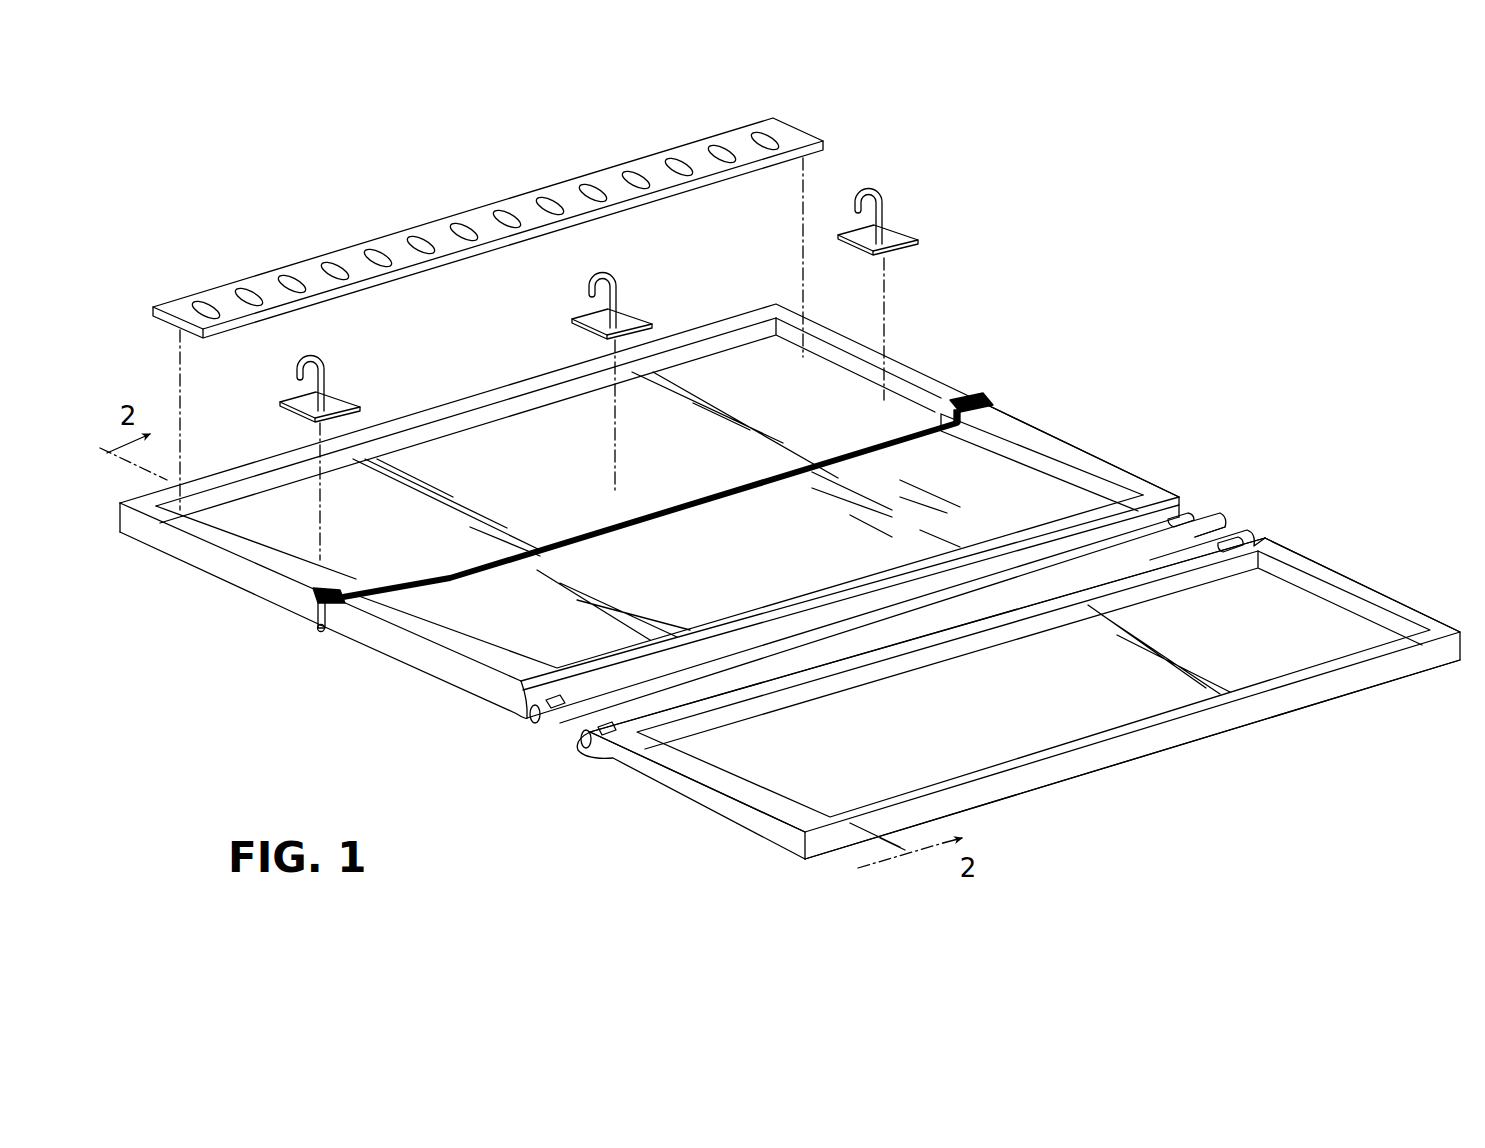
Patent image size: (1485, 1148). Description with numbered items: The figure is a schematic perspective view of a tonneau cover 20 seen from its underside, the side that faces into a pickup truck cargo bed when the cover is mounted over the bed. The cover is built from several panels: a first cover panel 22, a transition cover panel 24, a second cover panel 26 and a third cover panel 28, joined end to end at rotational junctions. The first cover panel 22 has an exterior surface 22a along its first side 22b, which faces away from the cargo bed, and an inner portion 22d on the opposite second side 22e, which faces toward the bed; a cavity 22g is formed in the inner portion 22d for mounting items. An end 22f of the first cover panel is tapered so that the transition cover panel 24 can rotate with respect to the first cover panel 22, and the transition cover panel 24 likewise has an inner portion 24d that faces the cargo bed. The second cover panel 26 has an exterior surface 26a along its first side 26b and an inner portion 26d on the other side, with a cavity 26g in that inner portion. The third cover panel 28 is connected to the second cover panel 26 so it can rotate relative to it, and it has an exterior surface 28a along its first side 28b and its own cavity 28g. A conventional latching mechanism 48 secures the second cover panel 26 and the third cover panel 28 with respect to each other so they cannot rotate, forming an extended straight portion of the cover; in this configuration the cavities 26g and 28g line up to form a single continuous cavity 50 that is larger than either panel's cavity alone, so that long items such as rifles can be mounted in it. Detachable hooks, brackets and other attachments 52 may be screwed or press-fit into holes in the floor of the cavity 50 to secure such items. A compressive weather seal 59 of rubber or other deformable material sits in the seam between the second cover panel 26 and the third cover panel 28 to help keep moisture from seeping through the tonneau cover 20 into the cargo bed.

The tonneau cover 20 is at (990, 241).
The first cover panel 22 is at (1303, 563).
The exterior surface 22a is at (632, 772).
The first side 22b is at (743, 849).
The inner portion 22d is at (1367, 599).
The second side 22e is at (1413, 617).
The end 22f is at (1218, 568).
The cavity 22g is at (1075, 695).
The transition cover panel 24 is at (1192, 555).
The inner portion 24d is at (1148, 532).
The second cover panel 26 is at (1064, 430).
The exterior surface 26a is at (470, 702).
The first side 26b is at (398, 682).
The inner portion 26d is at (1005, 425).
The cavity 26g is at (1077, 500).
The third cover panel 28 is at (845, 347).
The exterior surface 28a is at (277, 617).
The first side 28b is at (215, 588).
The cavity 28g is at (265, 520).
The latching mechanism 48 is at (958, 395).
The single continuous cavity 50 is at (840, 410).
The attachments 52 is at (748, 104).
The compressive weather seal 59 is at (318, 630).